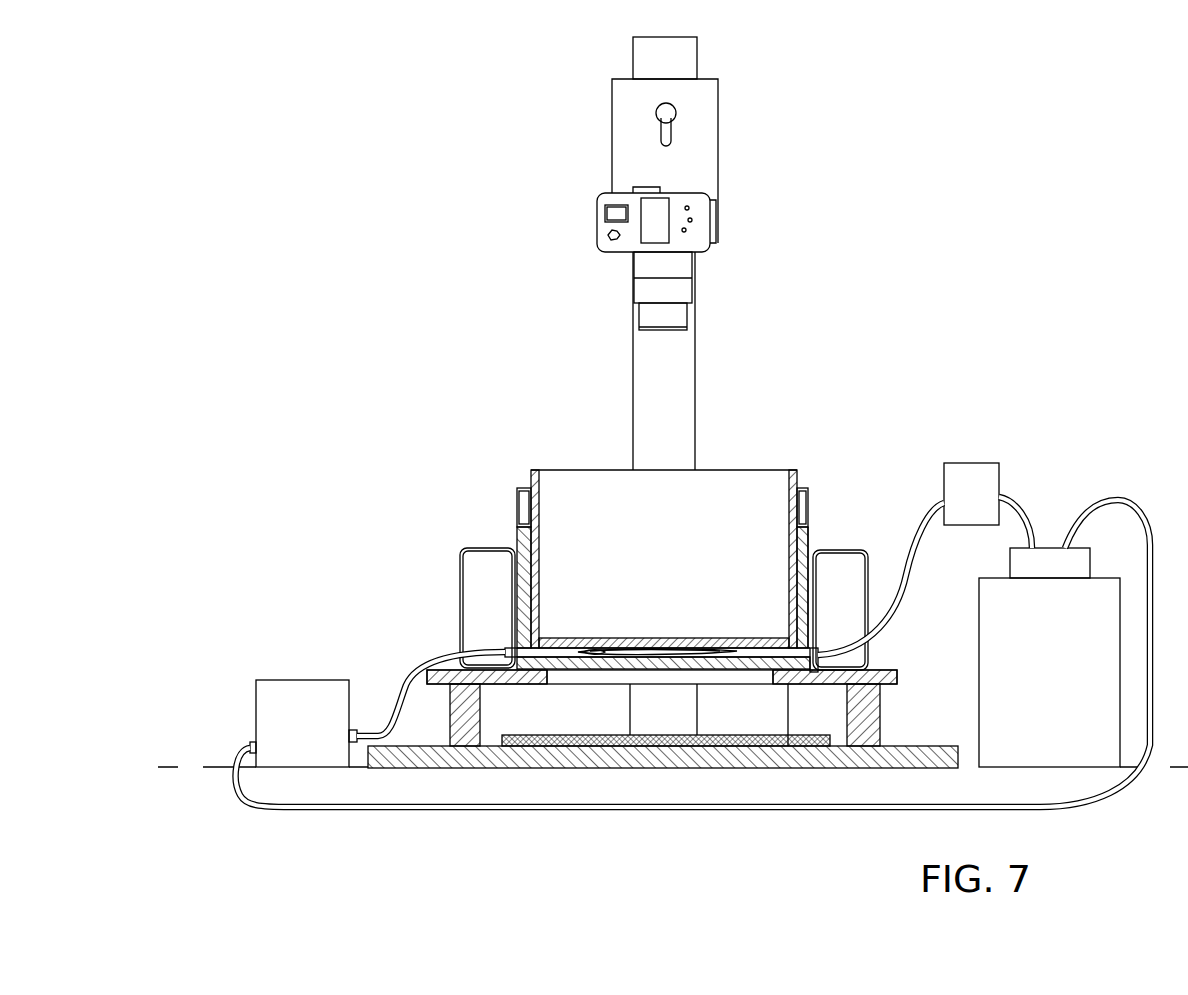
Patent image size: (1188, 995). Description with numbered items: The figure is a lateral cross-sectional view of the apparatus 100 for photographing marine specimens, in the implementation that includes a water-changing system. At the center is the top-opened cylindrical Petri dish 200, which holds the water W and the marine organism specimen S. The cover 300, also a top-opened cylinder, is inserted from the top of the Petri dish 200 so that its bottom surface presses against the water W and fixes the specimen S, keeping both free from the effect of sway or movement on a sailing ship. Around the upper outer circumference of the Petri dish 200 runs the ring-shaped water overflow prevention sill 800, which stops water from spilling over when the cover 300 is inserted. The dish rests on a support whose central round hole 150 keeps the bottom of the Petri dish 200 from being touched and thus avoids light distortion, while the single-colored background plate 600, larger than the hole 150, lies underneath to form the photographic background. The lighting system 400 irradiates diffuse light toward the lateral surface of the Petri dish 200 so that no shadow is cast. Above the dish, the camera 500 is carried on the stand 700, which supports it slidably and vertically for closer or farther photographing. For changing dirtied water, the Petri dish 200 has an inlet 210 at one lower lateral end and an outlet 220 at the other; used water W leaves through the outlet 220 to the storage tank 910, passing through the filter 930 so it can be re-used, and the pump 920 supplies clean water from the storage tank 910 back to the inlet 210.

The apparatus for photographing marine specimen 100 is at (492, 172).
The camera 500 is at (645, 290).
The stand 700 is at (682, 383).
The cover 300 is at (790, 470).
The water overflow prevention sill 800 is at (813, 488).
The Petri dish 200 is at (807, 548).
The lighting system 400 is at (460, 572).
The outlet 220 is at (495, 653).
The inlet 210 is at (812, 687).
The hole 150 is at (573, 682).
The background plate 600 is at (735, 748).
The marine organism specimen S is at (667, 657).
The water W is at (763, 658).
The filter 930 is at (263, 710).
The pump 920 is at (983, 463).
The storage tank 910 is at (984, 670).